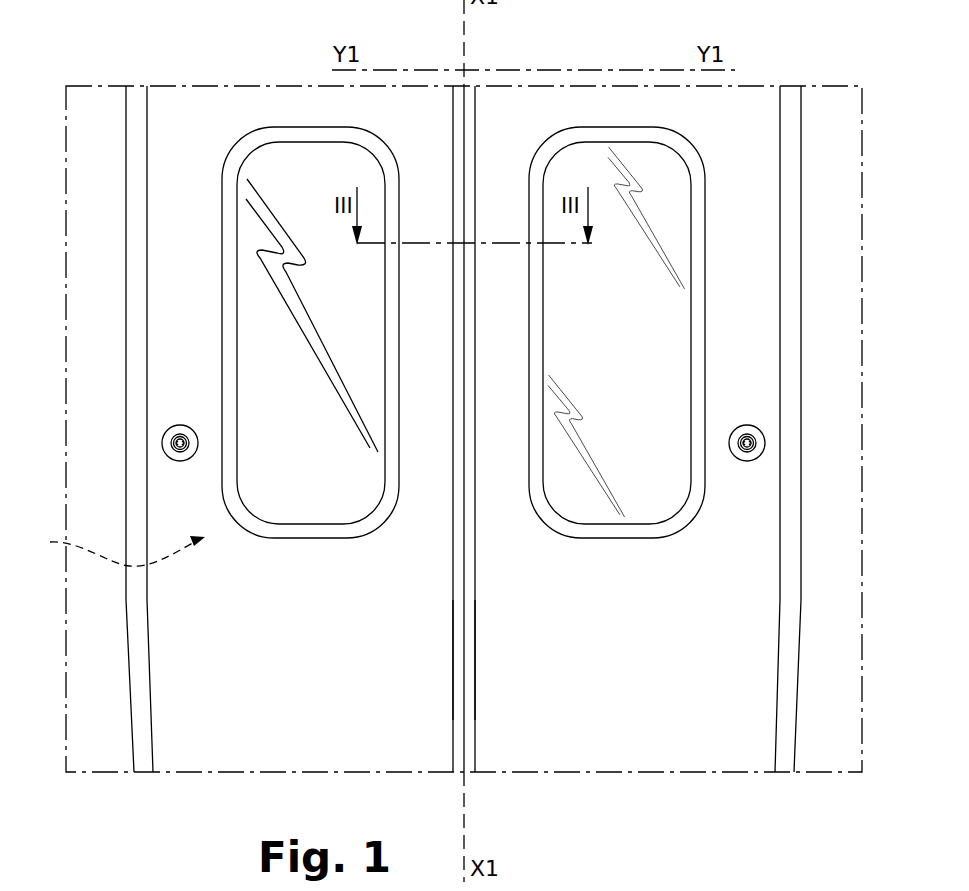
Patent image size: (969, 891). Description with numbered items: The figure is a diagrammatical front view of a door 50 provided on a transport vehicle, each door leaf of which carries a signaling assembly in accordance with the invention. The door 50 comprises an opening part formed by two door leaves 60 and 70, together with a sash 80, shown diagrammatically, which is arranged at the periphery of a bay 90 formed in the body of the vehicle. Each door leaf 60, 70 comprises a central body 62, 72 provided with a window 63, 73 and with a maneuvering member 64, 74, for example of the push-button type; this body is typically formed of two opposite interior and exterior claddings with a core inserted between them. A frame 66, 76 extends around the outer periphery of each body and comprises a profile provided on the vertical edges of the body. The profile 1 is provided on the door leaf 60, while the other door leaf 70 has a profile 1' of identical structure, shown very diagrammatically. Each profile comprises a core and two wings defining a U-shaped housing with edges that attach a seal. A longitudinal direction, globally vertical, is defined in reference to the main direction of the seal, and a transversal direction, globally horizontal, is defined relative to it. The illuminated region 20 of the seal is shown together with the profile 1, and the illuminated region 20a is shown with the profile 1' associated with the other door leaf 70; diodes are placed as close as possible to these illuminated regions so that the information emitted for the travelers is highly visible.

The door 50 is at (203, 56).
The door leaf 60 is at (251, 780).
The door leaf 70 is at (661, 780).
The central body 62 is at (300, 430).
The central body 72 is at (628, 430).
The window 63 is at (255, 312).
The window 73 is at (662, 340).
The maneuvering member 64 is at (176, 426).
The maneuvering member 74 is at (747, 461).
The frame 66 is at (137, 192).
The frame 76 is at (790, 192).
The sash 80 is at (463, 258).
The bay 90 is at (112, 548).
The profile 1 is at (417, 656).
The profile 1' is at (516, 660).
The illuminated region 20 is at (456, 104).
The illuminated region 20a is at (470, 120).